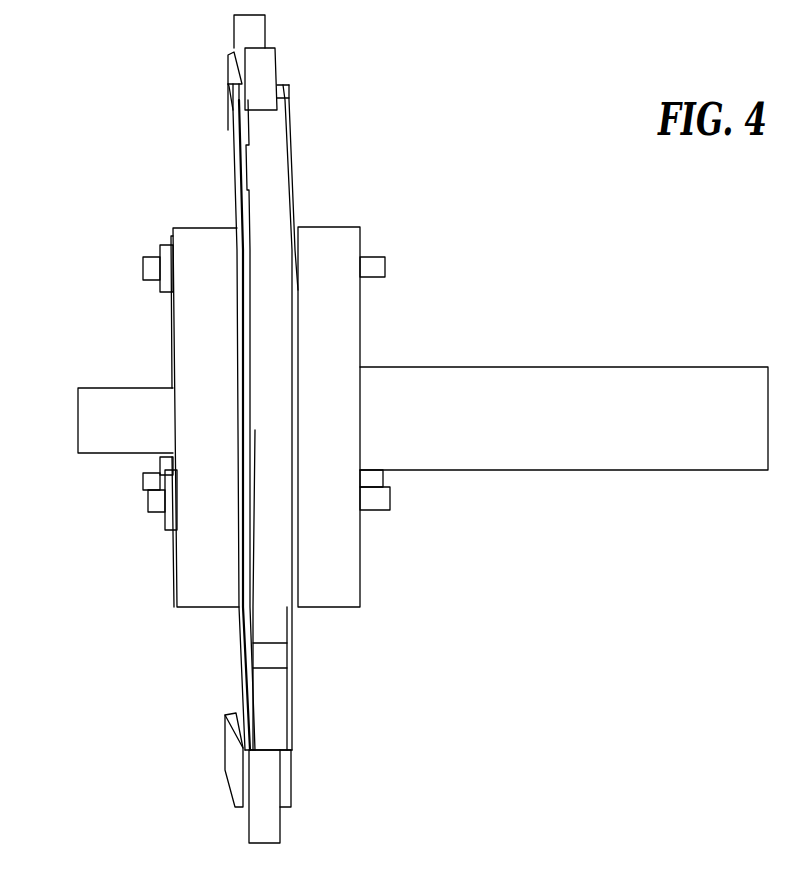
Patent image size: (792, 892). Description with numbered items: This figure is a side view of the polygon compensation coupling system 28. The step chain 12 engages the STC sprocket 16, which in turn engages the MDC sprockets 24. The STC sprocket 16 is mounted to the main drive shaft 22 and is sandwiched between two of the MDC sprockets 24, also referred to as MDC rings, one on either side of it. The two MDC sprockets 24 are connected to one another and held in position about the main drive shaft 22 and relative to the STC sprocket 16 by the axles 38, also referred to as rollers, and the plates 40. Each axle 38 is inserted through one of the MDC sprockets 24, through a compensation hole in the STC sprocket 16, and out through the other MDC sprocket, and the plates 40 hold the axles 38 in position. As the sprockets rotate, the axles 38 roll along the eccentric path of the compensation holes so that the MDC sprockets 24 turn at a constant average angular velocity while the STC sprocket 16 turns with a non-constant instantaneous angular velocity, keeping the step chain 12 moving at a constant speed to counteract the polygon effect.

The step chain 12 is at (266, 33).
The STC sprocket 16 is at (290, 92).
The main drive shaft 22 is at (650, 424).
The MDC sprocket 24 is at (192, 229).
The polygon compensation coupling system 28 is at (65, 132).
The axle 38 is at (152, 269).
The plate 40 is at (167, 283).